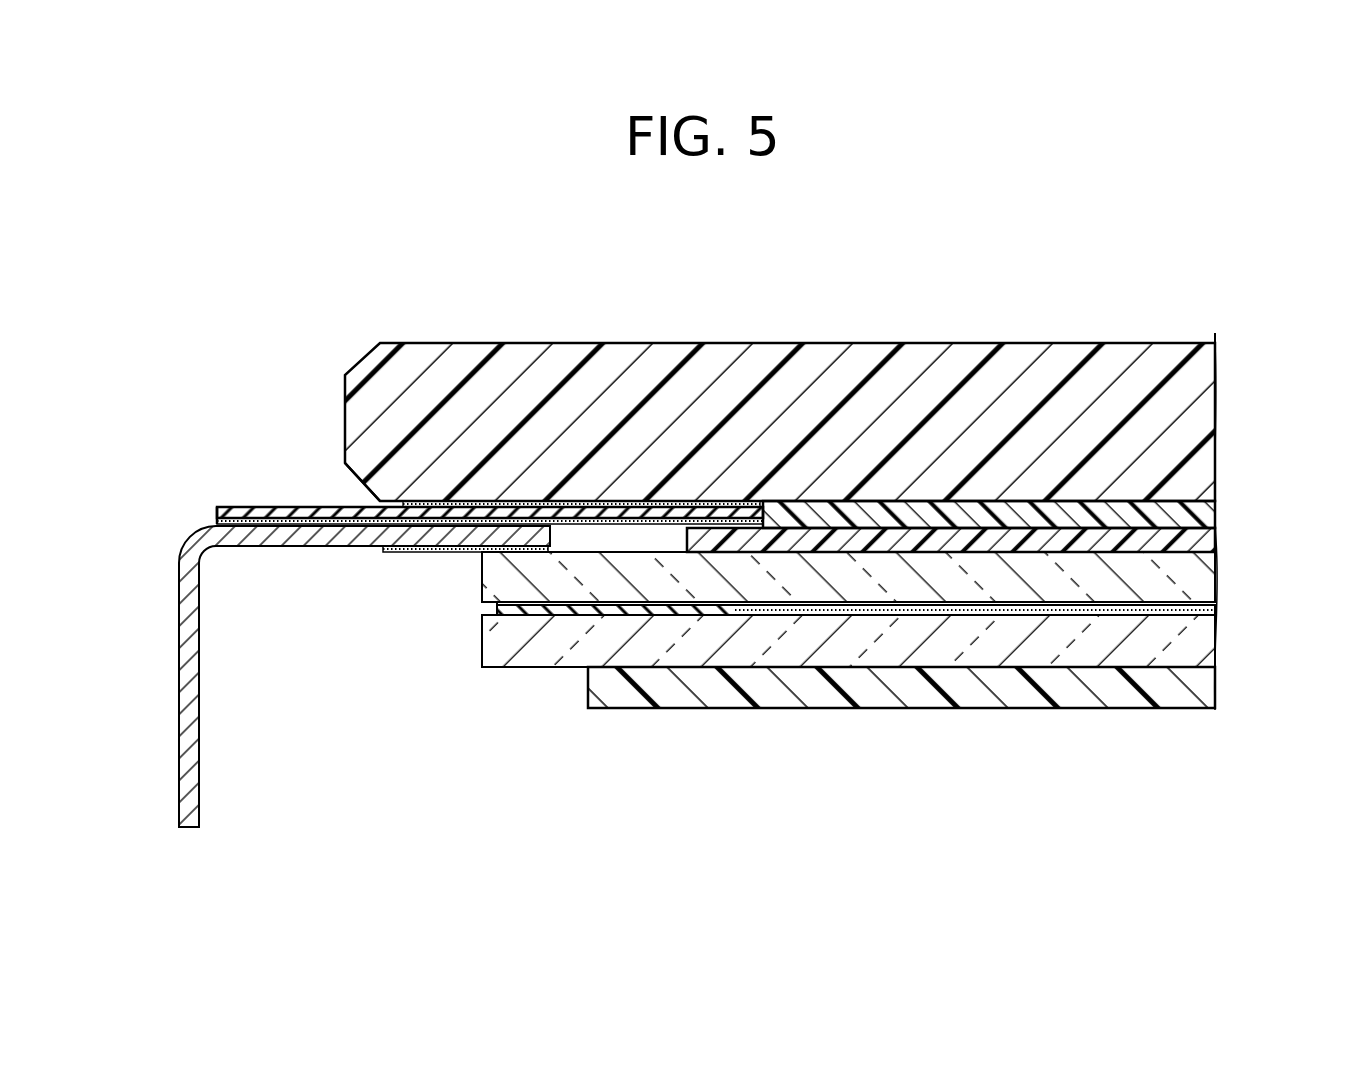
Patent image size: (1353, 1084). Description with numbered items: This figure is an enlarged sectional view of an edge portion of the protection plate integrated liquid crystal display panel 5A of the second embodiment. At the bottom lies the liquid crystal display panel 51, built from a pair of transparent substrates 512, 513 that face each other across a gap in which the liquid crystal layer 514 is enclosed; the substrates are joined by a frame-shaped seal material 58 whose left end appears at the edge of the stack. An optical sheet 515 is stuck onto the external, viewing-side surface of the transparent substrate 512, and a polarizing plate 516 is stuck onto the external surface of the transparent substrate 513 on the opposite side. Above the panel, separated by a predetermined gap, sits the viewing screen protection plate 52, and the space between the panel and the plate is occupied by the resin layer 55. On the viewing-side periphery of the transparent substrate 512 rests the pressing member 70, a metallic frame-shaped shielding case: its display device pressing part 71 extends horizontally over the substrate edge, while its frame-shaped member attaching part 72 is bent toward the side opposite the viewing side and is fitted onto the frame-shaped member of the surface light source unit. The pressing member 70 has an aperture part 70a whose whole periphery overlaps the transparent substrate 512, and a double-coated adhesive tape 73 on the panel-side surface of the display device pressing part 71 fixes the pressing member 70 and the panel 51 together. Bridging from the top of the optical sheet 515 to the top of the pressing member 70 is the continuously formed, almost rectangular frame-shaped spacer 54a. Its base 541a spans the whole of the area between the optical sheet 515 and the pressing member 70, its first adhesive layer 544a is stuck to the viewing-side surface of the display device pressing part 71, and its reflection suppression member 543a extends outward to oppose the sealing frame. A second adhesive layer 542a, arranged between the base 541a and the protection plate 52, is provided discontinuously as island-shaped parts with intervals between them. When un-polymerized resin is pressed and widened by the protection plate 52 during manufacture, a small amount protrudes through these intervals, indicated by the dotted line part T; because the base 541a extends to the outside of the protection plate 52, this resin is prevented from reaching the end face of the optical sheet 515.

The protection plate integrated liquid crystal display panel 5A is at (884, 306).
The viewing screen protection plate 52 is at (1202, 417).
The second adhesive layer 542a is at (493, 500).
The base 541a is at (425, 450).
The reflection suppression member 543a is at (247, 512).
The first adhesive layer 544a is at (260, 428).
The dotted line part T is at (342, 506).
The spacer 54a is at (188, 516).
The liquid crystal display panel 51 is at (857, 589).
The resin layer 55 is at (1207, 516).
The optical sheet 515 is at (1207, 542).
The transparent substrate 512 is at (1207, 578).
The liquid crystal layer 514 is at (1207, 610).
The transparent substrate 513 is at (1207, 642).
The polarizing plate 516 is at (1207, 688).
The seal material 58 is at (482, 645).
The pressing member 70 is at (331, 676).
The display device pressing part 71 is at (283, 547).
The frame-shaped member attaching part 72 is at (194, 734).
The aperture part 70a is at (568, 530).
The double-coated adhesive tape 73 is at (417, 553).